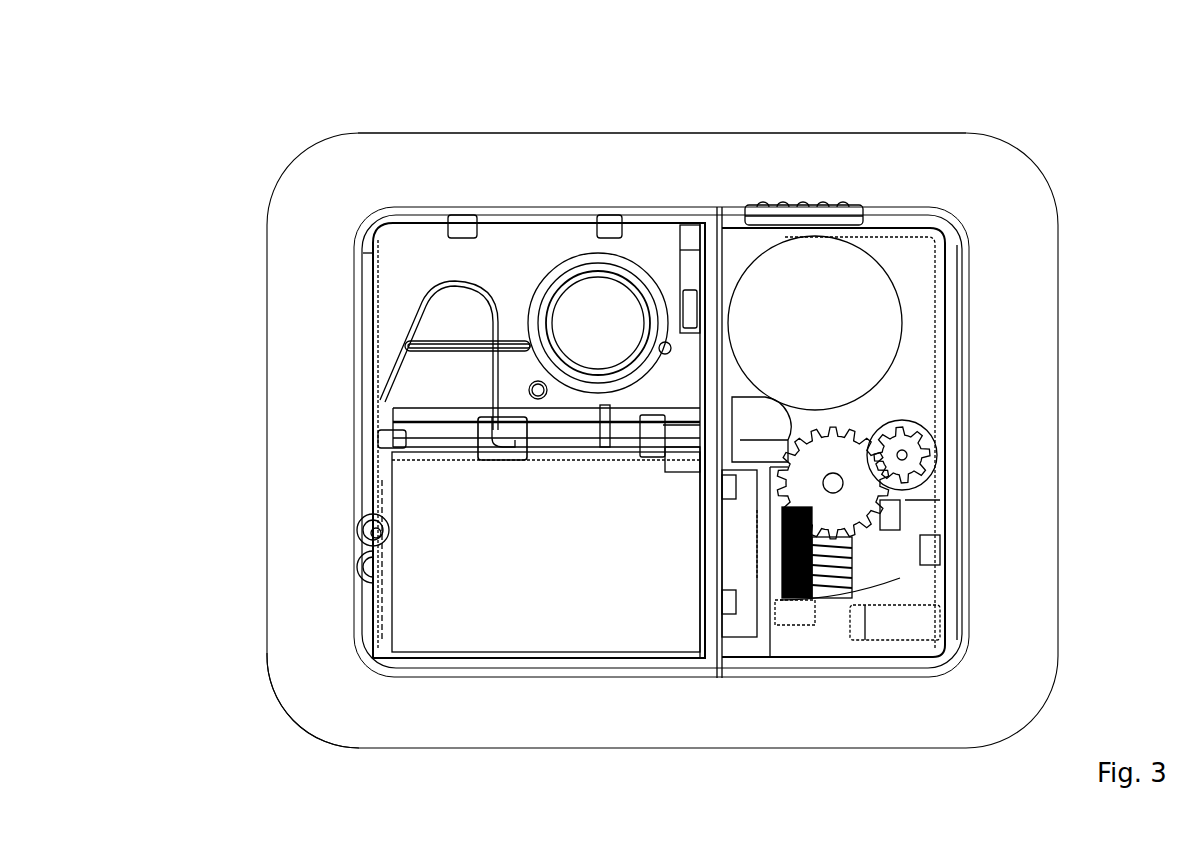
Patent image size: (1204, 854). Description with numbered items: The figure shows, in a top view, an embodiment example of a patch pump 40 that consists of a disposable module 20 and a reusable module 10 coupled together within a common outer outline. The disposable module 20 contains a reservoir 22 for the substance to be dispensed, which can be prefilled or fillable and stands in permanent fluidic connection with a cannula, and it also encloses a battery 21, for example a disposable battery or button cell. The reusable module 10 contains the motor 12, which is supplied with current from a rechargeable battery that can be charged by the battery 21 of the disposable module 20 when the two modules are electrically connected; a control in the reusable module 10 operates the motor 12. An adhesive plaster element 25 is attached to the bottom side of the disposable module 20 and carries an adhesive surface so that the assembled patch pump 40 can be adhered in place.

The reusable module 10 is at (823, 155).
The motor 12 is at (925, 452).
The disposable module 20 is at (532, 150).
The battery 21 is at (598, 297).
The reservoir 22 is at (530, 623).
The adhesive plaster element 25 is at (325, 698).
The patch pump 40 is at (712, 131).